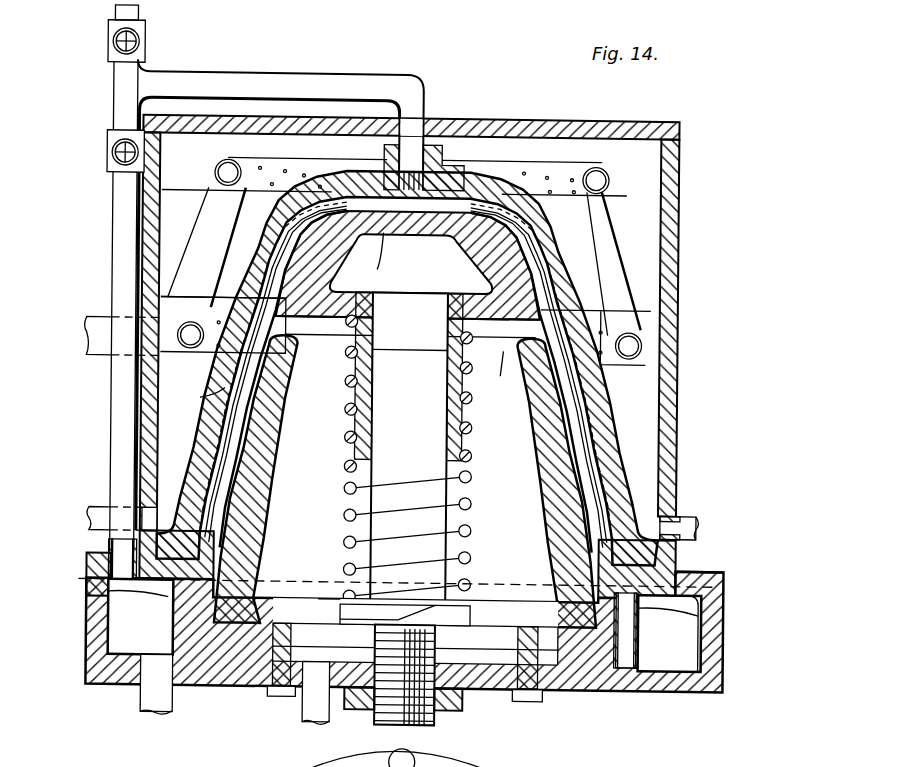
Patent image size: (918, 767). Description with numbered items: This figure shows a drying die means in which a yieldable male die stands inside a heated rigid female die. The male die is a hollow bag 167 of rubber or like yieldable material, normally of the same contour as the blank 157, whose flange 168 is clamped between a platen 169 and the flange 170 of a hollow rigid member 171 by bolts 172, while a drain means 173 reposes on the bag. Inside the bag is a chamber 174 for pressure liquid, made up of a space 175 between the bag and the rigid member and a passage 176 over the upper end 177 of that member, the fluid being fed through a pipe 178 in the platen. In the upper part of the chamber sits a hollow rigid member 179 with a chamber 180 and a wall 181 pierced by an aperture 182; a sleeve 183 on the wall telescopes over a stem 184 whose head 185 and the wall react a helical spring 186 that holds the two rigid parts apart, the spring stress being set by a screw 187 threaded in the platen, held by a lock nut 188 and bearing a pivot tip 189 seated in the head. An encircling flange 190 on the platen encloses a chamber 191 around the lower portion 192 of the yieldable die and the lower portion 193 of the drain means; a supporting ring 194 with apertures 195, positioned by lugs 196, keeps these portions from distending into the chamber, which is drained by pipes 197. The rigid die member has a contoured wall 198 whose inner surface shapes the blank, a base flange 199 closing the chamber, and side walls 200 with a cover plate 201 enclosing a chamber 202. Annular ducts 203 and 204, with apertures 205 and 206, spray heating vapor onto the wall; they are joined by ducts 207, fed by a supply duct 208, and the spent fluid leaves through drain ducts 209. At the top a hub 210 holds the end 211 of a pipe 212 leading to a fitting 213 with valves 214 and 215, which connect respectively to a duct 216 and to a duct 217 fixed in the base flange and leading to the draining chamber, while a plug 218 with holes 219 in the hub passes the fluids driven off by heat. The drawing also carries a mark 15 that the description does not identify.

The arm 15 is at (170, 312).
The blank 157 is at (193, 386).
The hollow member or bag 167 is at (240, 455).
The flange 168 is at (545, 700).
The platen 169 is at (228, 692).
The flange 170 is at (512, 626).
The hollow rigid member 171 is at (560, 548).
The bolts 172 is at (522, 690).
The drain means 173 is at (600, 468).
The chamber 174 is at (286, 548).
The space 175 is at (600, 560).
The passage 176 is at (475, 376).
The upper end 177 is at (530, 384).
The pipe or duct 178 is at (305, 714).
The hollow rigid member 179 is at (490, 266).
The chamber 180 is at (411, 264).
The wall 181 is at (484, 292).
The aperture 182 is at (348, 300).
The sleeve 183 is at (462, 412).
The stem or shaft 184 is at (440, 498).
The head 185 is at (472, 613).
The helical spring 186 is at (466, 436).
The screw 187 is at (437, 728).
The lock nut 188 is at (350, 712).
The pivot tip 189 is at (342, 620).
The encircling flange 190 is at (725, 666).
The chamber 191 is at (132, 652).
The lower portion 192 is at (604, 695).
The lower portion 193 is at (640, 660).
The lateral supporting ring 194 is at (632, 626).
The apertures 195 is at (720, 640).
The lugs 196 is at (715, 578).
The pipes or ducts 197 is at (143, 712).
The contoured wall 198 is at (600, 428).
The base flange 199 is at (100, 577).
The side walls 200 is at (668, 482).
The cover plate or top wall 201 is at (660, 130).
The chamber 202 is at (651, 166).
The annular duct 203 is at (582, 176).
The annular duct 204 is at (403, 350).
The apertures 205 is at (283, 172).
The apertures 206 is at (222, 318).
The ducts 207 is at (205, 208).
The supply duct 208 is at (86, 344).
The outlet or drain ducts 209 is at (90, 522).
The hub 210 is at (440, 150).
The end 211 is at (410, 136).
The duct or pipe 212 is at (290, 84).
The fitting 213 is at (111, 102).
The valve 214 is at (105, 46).
The valve 215 is at (105, 158).
The duct or pipe 216 is at (112, 14).
The pipe or duct 217 is at (135, 278).
The plug 218 is at (385, 175).
The holes or apertures 219 is at (372, 250).